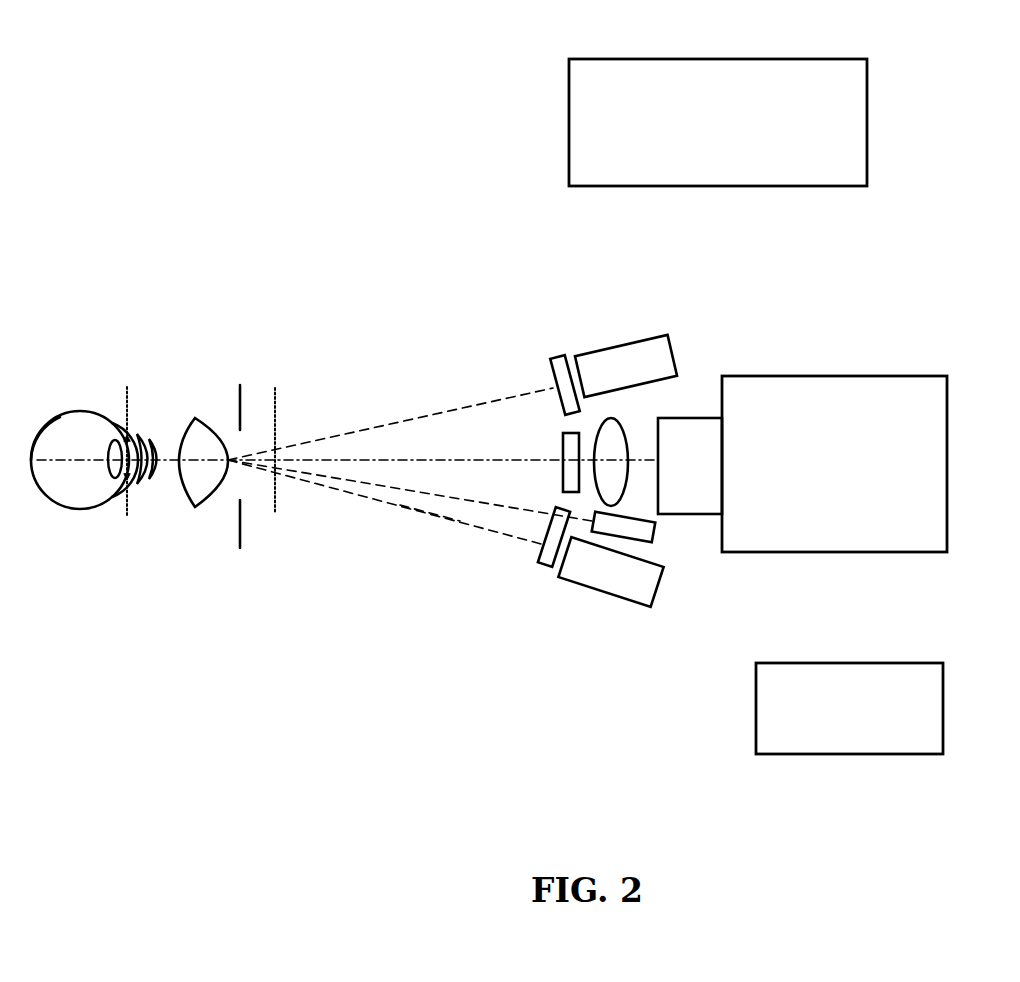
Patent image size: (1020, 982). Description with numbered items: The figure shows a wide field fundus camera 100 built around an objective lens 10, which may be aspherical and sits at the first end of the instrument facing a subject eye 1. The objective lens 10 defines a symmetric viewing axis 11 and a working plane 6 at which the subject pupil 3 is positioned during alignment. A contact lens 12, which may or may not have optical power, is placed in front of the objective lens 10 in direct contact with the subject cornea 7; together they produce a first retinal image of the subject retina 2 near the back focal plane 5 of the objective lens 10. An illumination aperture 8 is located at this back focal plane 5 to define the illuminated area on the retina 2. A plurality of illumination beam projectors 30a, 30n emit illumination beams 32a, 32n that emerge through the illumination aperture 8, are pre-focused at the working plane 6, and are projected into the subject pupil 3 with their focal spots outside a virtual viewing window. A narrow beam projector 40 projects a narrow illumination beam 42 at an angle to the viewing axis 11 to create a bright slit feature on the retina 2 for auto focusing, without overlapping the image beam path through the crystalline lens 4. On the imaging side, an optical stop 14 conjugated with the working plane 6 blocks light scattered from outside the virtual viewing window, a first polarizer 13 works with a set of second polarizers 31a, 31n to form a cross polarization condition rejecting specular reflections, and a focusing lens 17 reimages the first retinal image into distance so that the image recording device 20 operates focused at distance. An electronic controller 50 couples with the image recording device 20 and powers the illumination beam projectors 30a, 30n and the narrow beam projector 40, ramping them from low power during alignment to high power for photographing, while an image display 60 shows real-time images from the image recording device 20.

The subject eye 1 is at (98, 422).
The subject retina 2 is at (47, 473).
The subject pupil 3 is at (123, 500).
The crystalline lens 4 is at (113, 470).
The back focal plane 5 is at (277, 395).
The working plane 6 is at (127, 383).
The subject cornea 7 is at (131, 433).
The illumination aperture 8 is at (240, 387).
The objective lens 10 is at (197, 488).
The symmetric viewing axis 11 is at (453, 463).
The contact lens 12 is at (158, 483).
The first polarizer 13 is at (574, 433).
The optical stop 14 is at (558, 420).
The focusing lens 17 is at (628, 440).
The image recording device 20 is at (893, 373).
The illumination beam projector 30a is at (620, 597).
The illumination beam projector 30n is at (668, 335).
The second polarizer 31a is at (550, 570).
The second polarizer 31n is at (555, 353).
The illumination beam 32a is at (485, 540).
The illumination beam 32n is at (470, 398).
The narrow beam projector 40 is at (657, 538).
The narrow illumination beam 42 is at (347, 490).
The electronic controller 50 is at (913, 670).
The image display 60 is at (718, 68).
The wide field fundus camera 100 is at (288, 198).